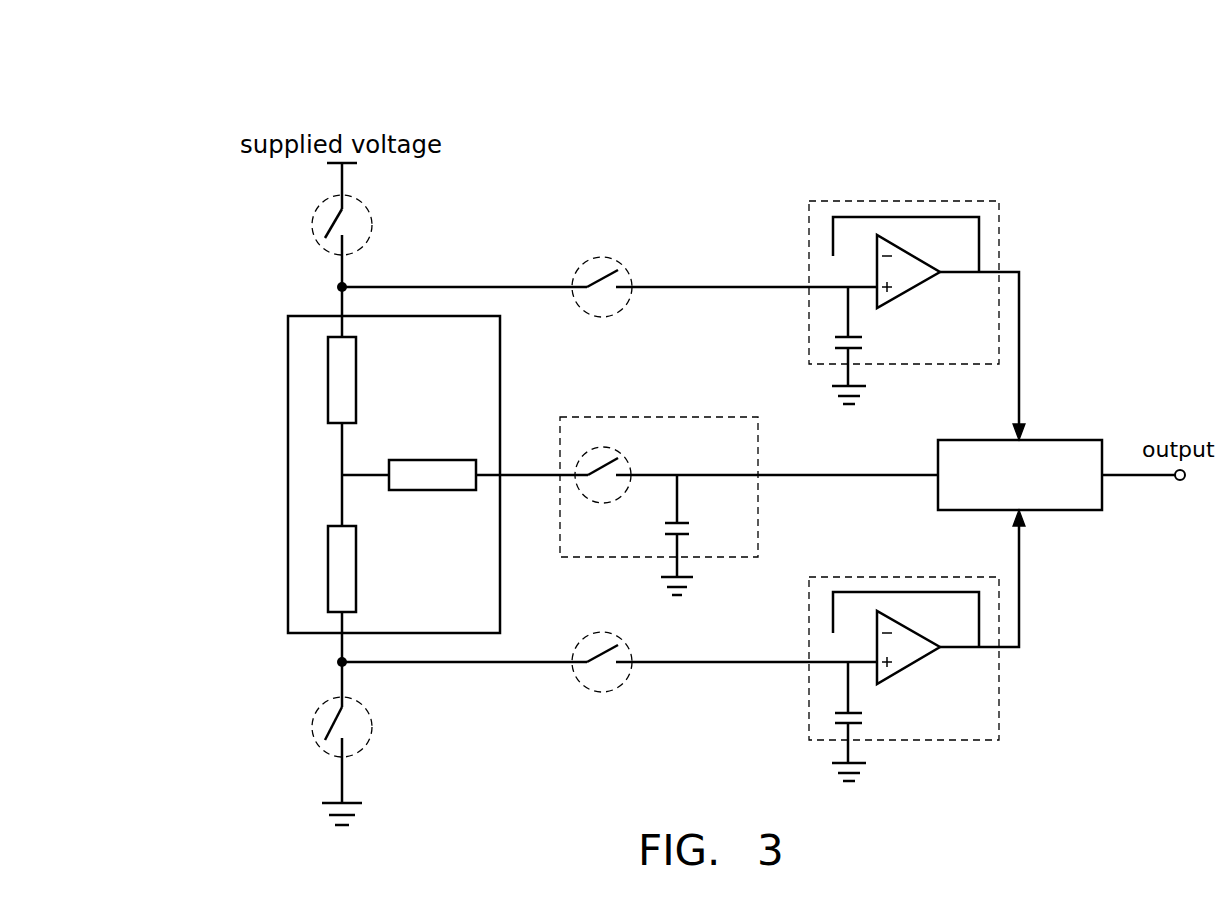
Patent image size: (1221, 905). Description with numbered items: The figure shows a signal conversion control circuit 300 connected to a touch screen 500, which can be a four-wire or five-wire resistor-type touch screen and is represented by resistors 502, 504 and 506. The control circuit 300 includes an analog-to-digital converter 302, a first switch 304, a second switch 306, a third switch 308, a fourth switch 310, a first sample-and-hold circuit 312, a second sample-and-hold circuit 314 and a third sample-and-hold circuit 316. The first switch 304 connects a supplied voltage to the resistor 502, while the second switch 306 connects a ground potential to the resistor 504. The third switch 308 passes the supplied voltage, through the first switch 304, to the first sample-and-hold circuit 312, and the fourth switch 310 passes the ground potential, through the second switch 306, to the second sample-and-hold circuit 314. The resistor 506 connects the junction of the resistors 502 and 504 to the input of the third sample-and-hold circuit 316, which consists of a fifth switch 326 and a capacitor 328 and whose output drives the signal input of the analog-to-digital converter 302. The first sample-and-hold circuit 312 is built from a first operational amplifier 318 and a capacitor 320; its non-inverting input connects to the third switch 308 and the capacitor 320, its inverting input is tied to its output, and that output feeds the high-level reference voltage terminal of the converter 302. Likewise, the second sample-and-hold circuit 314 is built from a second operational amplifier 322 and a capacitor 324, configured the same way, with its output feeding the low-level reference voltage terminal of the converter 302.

The signal conversion control circuit 300 is at (798, 120).
The analog-to-digital converter 302 is at (1078, 440).
The first switch 304 is at (373, 222).
The second switch 306 is at (373, 725).
The third switch 308 is at (628, 274).
The fourth switch 310 is at (628, 649).
The first sample-and-hold circuit 312 is at (929, 201).
The second sample-and-hold circuit 314 is at (927, 742).
The third sample-and-hold circuit 316 is at (660, 417).
The first operational amplifier 318 is at (929, 328).
The capacitor 320 is at (869, 345).
The second operational amplifier 322 is at (929, 600).
The capacitor 324 is at (869, 721).
The fifth switch 326 is at (628, 461).
The capacitor 328 is at (698, 535).
The touch screen 500 is at (288, 478).
The resistor 502 is at (356, 358).
The resistor 504 is at (356, 562).
The resistor 506 is at (434, 460).